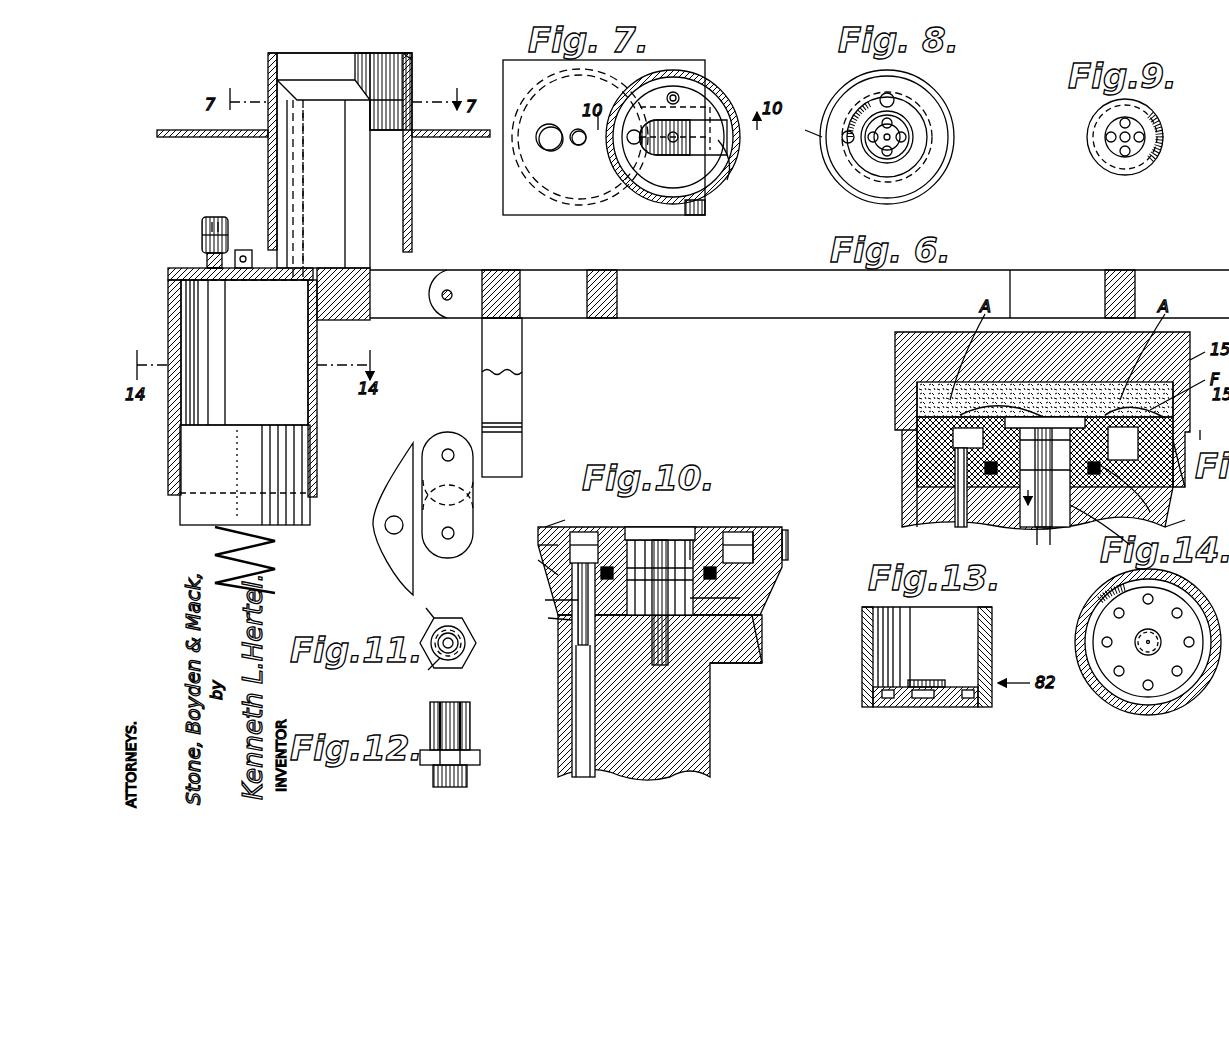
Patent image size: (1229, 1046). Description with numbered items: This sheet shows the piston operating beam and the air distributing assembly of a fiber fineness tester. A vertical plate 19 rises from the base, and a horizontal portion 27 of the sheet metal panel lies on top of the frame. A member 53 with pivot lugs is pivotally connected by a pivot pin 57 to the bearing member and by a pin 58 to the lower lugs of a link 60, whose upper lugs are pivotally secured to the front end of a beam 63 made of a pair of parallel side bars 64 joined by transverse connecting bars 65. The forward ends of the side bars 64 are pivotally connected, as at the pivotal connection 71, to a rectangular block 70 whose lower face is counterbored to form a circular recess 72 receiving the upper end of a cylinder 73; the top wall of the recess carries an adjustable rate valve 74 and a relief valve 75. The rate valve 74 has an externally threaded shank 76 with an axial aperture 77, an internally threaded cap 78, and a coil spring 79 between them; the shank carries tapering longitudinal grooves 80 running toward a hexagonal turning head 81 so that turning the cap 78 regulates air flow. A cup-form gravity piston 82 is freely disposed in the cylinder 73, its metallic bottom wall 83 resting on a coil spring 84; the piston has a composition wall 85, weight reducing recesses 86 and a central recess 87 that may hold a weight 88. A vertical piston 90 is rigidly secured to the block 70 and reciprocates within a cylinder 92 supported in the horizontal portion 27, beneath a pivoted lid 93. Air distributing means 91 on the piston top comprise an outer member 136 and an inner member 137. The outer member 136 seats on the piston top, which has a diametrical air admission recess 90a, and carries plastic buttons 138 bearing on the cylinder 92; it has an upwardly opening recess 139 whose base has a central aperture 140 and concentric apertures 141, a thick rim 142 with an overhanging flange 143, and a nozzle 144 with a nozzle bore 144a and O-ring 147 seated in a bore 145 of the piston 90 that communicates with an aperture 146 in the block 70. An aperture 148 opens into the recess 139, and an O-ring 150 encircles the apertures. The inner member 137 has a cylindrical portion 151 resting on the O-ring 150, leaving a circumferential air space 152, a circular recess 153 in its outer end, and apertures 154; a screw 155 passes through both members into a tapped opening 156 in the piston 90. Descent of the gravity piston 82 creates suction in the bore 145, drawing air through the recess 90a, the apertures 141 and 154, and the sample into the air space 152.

In FIG. 6, the vertical plate 19 is at (393, 492).
In FIG. 6, the horizontal portion of panel 27 is at (170, 140).
In FIG. 6, the member 53 is at (473, 515).
In FIG. 6, the pivot pin 57 is at (448, 540).
In FIG. 6, the pin 58 is at (448, 448).
In FIG. 6, the link 60 is at (522, 393).
In FIG. 6, the beam 63 is at (1012, 270).
In FIG. 6, the side bars 64 is at (408, 290).
In FIG. 6, the transverse connecting bars 65 is at (600, 318).
In FIG. 6, the block 70 is at (176, 268).
In FIG. 7, the block 70 is at (503, 160).
In FIG. 6, the pivotal connection 71 is at (352, 320).
In FIG. 6, the circular recess 72 is at (168, 292).
In FIG. 7, the cylinder 73 is at (545, 200).
In FIG. 6, the rate valve 74 is at (200, 232).
In FIG. 7, the rate valve 74 is at (546, 150).
In FIG. 6, the relief valve 75 is at (317, 425).
In FIG. 7, the relief valve 75 is at (578, 145).
In FIG. 14, the relief valve 75 is at (1110, 575).
In FIG. 11, the threaded shank 76 is at (452, 628).
In FIG. 12, the threaded shank 76 is at (430, 710).
In FIG. 6, the axial aperture 77 is at (214, 272).
In FIG. 11, the axial aperture 77 is at (418, 669).
In FIG. 6, the cap 78 is at (210, 217).
In FIG. 6, the coil spring 79 is at (222, 217).
In FIG. 11, the longitudinal grooves 80 is at (476, 643).
In FIG. 12, the longitudinal grooves 80 is at (460, 702).
In FIG. 11, the hexagonal turning head 81 is at (417, 606).
In FIG. 12, the hexagonal turning head 81 is at (470, 755).
In FIG. 6, the gravity piston 82 is at (208, 515).
In FIG. 14, the gravity piston 82 is at (1090, 655).
In FIG. 13, the bottom wall 83 is at (960, 700).
In FIG. 14, the bottom wall 83 is at (1183, 669).
In FIG. 6, the coil spring 84 is at (275, 573).
In FIG. 14, the coil spring 84 is at (1158, 636).
In FIG. 13, the composition wall 85 is at (862, 650).
In FIG. 13, the weight reducing recesses 86 is at (925, 680).
In FIG. 13, the central recess 87 is at (923, 698).
In FIG. 13, the weight 88 is at (888, 698).
In FIG. 6, the piston 90 is at (340, 188).
In FIG. 7, the piston 90 is at (682, 175).
In FIG. 10, the piston 90 is at (700, 745).
In FIG. 7, the air admission recess 90a is at (741, 165).
In FIG. 10, the air admission recess 90a is at (762, 640).
In FIG. 6, the air distributing means 91 is at (372, 56).
In FIG. 10, the air distributing means 91 is at (535, 568).
In FIG. 6, the cylinder 92 is at (412, 215).
In FIG. 7, the cylinder 92 is at (722, 105).
In FIG. 8, the cylinder 92 is at (803, 142).
In FIG. 6, the lid 93 is at (895, 345).
In FIG. 8, the outer member 136 is at (952, 112).
In FIG. 10, the outer member 136 is at (755, 595).
In FIG. 9, the inner member 137 is at (1160, 110).
In FIG. 10, the inner member 137 is at (772, 524).
In FIG. 6, the plastic buttons 138 is at (412, 56).
In FIG. 8, the plastic buttons 138 is at (845, 80).
In FIG. 10, the plastic buttons 138 is at (788, 545).
In FIG. 6, the recess 139 is at (1130, 435).
In FIG. 8, the recess 139 is at (912, 137).
In FIG. 10, the recess 139 is at (740, 550).
In FIG. 8, the central aperture 140 is at (895, 125).
In FIG. 6, the concentric apertures 141 is at (1043, 545).
In FIG. 8, the concentric apertures 141 is at (893, 150).
In FIG. 10, the concentric apertures 141 is at (740, 598).
In FIG. 10, the rim 142 is at (542, 545).
In FIG. 6, the flange 143 is at (960, 415).
In FIG. 10, the flange 143 is at (562, 512).
In FIG. 6, the nozzle 144 is at (957, 488).
In FIG. 8, the nozzle 144 is at (848, 143).
In FIG. 10, the nozzle 144 is at (545, 532).
In FIG. 10, the nozzle bore 144a is at (541, 616).
In FIG. 6, the bore 145 is at (305, 240).
In FIG. 10, the bore 145 is at (583, 660).
In FIG. 6, the aperture 146 is at (298, 285).
In FIG. 10, the O-ring 147 is at (578, 635).
In FIG. 8, the aperture 148 is at (890, 95).
In FIG. 8, the O-ring 150 is at (866, 163).
In FIG. 10, the O-ring 150 is at (745, 530).
In FIG. 6, the cylindrical portion 151 is at (955, 438).
In FIG. 9, the cylindrical portion 151 is at (1160, 140).
In FIG. 10, the cylindrical portion 151 is at (636, 510).
In FIG. 6, the circumferential air space 152 is at (1185, 520).
In FIG. 10, the circumferential air space 152 is at (585, 532).
In FIG. 9, the circular recess 153 is at (1108, 135).
In FIG. 10, the circular recess 153 is at (640, 540).
In FIG. 6, the apertures 154 is at (1135, 494).
In FIG. 9, the apertures 154 is at (1125, 157).
In FIG. 10, the apertures 154 is at (710, 529).
In FIG. 6, the screw 155 is at (1040, 420).
In FIG. 10, the screw 155 is at (665, 527).
In FIG. 6, the tapped opening 156 is at (1082, 542).
In FIG. 10, the tapped opening 156 is at (693, 660).